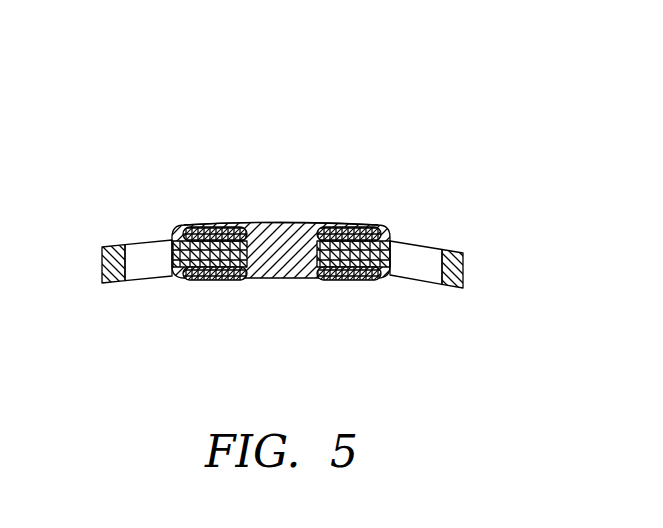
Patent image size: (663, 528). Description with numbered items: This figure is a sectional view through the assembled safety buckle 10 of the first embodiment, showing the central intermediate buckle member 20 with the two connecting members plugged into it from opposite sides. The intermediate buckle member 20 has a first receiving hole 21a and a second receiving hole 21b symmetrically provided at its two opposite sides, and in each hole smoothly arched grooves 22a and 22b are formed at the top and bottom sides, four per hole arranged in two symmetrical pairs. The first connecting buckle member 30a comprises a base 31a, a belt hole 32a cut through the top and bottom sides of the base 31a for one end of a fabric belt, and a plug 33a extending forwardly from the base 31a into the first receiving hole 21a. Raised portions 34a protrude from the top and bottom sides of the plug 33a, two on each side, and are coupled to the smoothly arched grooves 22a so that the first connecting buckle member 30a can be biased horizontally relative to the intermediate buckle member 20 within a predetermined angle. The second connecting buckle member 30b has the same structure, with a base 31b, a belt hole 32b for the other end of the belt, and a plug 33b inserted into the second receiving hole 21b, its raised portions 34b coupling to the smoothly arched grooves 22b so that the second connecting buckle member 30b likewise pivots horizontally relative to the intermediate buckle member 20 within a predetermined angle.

The safety buckle 10 is at (277, 137).
The intermediate buckle member 20 is at (280, 280).
The first receiving hole 21a is at (243, 224).
The second receiving hole 21b is at (322, 226).
The smoothly arched grooves 22a is at (202, 244).
The smoothly arched grooves 22b is at (365, 246).
The first connecting buckle member 30a is at (136, 264).
The second connecting buckle member 30b is at (434, 267).
The base 31a is at (113, 250).
The base 31b is at (432, 288).
The belt hole 32a is at (148, 253).
The belt hole 32b is at (420, 255).
The plug 33a is at (233, 279).
The plug 33b is at (332, 279).
The raised portions 34a is at (202, 243).
The raised portions 34b is at (385, 332).